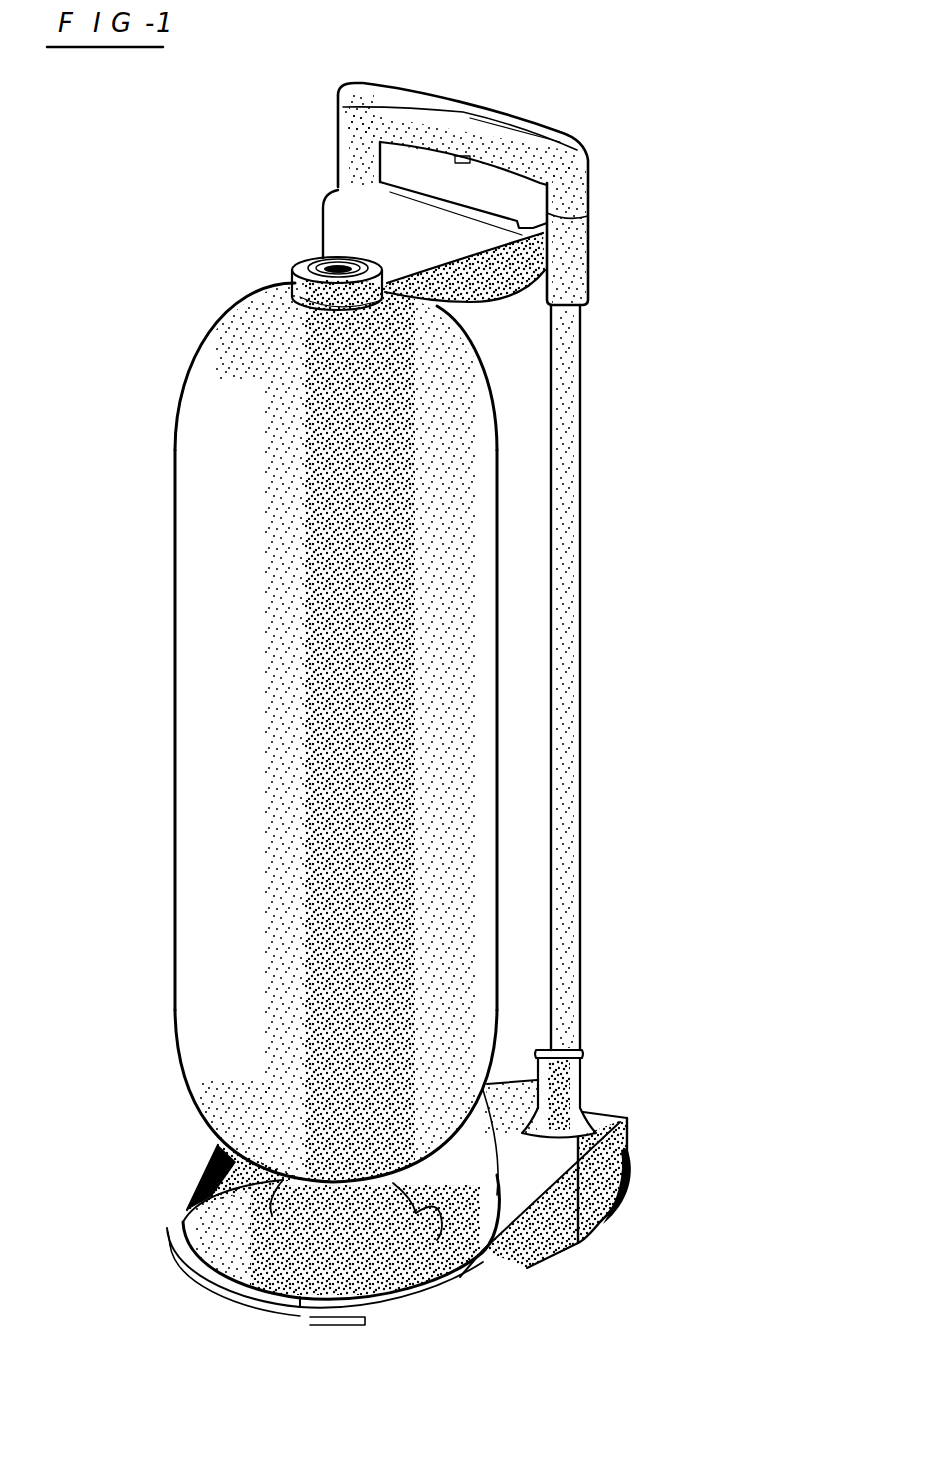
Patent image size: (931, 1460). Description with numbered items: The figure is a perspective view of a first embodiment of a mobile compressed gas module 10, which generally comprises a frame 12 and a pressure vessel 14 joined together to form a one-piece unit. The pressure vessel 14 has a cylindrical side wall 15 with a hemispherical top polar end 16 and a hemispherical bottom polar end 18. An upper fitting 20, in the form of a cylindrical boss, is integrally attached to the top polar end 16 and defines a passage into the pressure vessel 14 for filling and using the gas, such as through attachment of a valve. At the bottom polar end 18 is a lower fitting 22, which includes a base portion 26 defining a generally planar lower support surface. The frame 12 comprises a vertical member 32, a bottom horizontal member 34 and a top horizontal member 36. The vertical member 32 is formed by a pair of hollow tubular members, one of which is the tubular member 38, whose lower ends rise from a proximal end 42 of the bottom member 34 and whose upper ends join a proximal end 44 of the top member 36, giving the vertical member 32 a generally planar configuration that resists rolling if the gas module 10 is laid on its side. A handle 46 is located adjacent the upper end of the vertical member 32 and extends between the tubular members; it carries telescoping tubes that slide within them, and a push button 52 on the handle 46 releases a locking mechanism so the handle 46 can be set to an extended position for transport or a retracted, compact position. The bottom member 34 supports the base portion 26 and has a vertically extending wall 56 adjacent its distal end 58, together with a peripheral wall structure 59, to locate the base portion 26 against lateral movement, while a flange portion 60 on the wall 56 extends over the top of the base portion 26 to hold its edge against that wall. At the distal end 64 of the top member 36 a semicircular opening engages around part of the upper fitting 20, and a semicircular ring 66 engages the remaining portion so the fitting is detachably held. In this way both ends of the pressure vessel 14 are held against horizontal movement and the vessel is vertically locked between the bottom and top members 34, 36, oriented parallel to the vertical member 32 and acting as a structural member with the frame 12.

The mobile compressed gas module 10 is at (150, 208).
The frame 12 is at (604, 226).
The pressure vessel 14 is at (166, 794).
The cylindrical side wall 15 is at (205, 727).
The top polar end 16 is at (235, 350).
The bottom polar end 18 is at (222, 1148).
The upper fitting 20 is at (322, 268).
The lower fitting 22 is at (485, 1252).
The base portion 26 is at (213, 1223).
The vertical member 32 is at (588, 645).
The bottom horizontal member 34 is at (604, 1234).
The top horizontal member 36 is at (312, 222).
The tubular member 38 is at (582, 817).
The proximal end of the bottom member 42 is at (560, 1155).
The proximal end of the top member 44 is at (322, 190).
The handle 46 is at (513, 125).
The push button 52 is at (462, 156).
The vertically extending wall 56 is at (236, 1303).
The distal end of the bottom member 58 is at (165, 1255).
The peripheral wall structure 59 is at (473, 1165).
The flange portion 60 is at (186, 1292).
The distal end of the top member 64 is at (433, 320).
The semicircular ring 66 is at (305, 283).